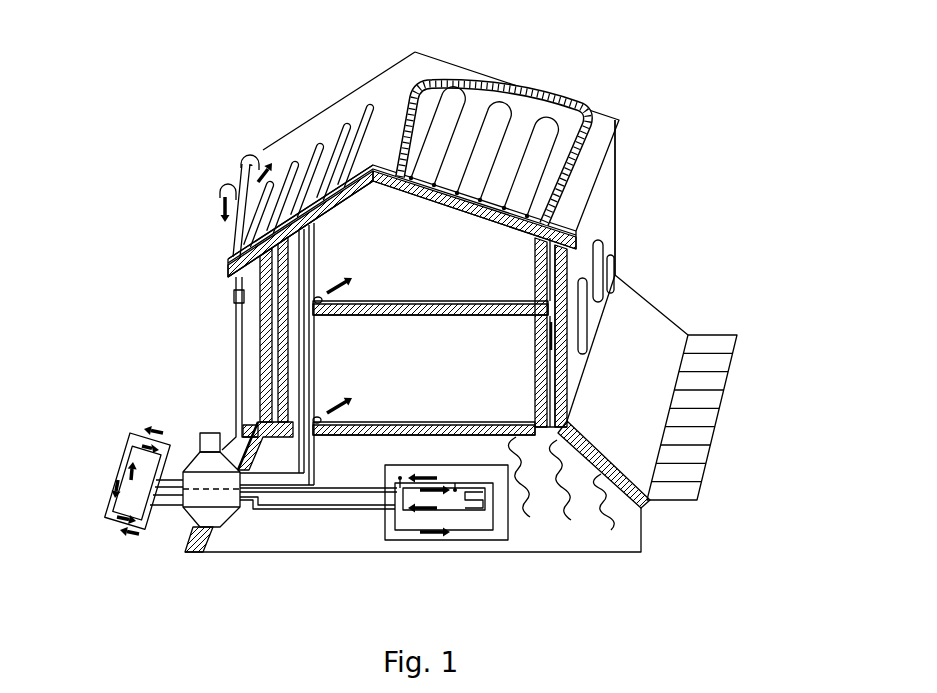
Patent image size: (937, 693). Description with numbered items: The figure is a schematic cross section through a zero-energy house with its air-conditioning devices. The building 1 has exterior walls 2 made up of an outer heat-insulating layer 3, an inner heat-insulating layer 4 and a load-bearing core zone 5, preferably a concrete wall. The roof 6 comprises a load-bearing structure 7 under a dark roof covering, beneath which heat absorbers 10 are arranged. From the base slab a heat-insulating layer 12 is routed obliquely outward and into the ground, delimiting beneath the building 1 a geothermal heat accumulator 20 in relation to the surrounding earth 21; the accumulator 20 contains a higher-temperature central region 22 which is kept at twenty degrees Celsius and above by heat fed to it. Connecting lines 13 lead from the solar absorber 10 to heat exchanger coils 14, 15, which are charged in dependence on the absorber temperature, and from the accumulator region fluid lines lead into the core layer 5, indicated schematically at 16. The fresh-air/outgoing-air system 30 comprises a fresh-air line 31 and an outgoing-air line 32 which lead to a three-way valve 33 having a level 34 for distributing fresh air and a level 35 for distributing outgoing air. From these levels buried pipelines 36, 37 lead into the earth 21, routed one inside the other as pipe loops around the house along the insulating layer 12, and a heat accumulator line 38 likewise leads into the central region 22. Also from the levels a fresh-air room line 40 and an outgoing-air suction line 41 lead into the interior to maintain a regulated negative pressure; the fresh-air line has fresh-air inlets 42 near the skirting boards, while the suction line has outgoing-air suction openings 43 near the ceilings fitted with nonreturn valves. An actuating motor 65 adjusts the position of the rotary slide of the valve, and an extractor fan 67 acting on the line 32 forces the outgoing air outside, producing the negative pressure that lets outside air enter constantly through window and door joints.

The building 1 is at (615, 225).
The exterior walls 2 is at (227, 283).
The outer heat-insulating layer 3 is at (561, 283).
The inner heat-insulating layer 4 is at (540, 298).
The core zone 5 is at (552, 393).
The roof 6 is at (582, 108).
The load-bearing structure 7 is at (232, 291).
The heat absorbers 10 is at (413, 53).
The heat-insulating layer 12 is at (625, 485).
The connecting lines 13 is at (533, 259).
The heat exchanger coil 14 is at (482, 508).
The heat exchanger coil 15 is at (633, 552).
The fluid lines in core layer 16 is at (550, 340).
The geothermal heat accumulator 20 is at (350, 540).
The surrounding earth 21 is at (60, 461).
The central region 22 is at (415, 522).
The fresh-air/outgoing-air system 30 is at (313, 359).
The fresh-air line 31 is at (244, 157).
The outgoing-air line 32 is at (238, 320).
The three-way valve 33 is at (217, 517).
The level 34 is at (193, 480).
The level 35 is at (218, 497).
The buried pipeline 36 is at (128, 443).
The buried pipeline 37 is at (118, 532).
The heat accumulator line 38 is at (400, 478).
The fresh-air room line 40 is at (312, 257).
The outgoing-air suction line 41 is at (300, 247).
The fresh-air inlets 42 is at (325, 298).
The outgoing-air suction openings 43 is at (297, 337).
The actuating motor 65 is at (212, 443).
The extractor fan 67 is at (236, 297).